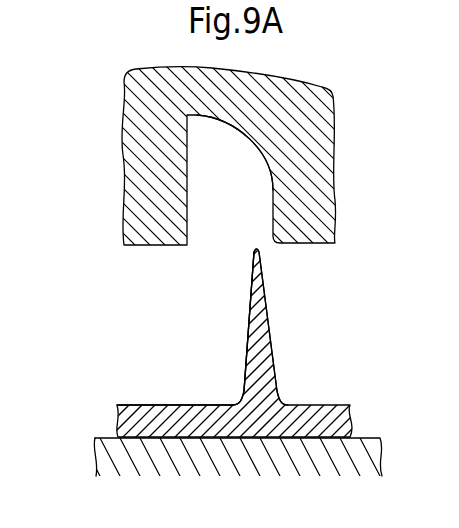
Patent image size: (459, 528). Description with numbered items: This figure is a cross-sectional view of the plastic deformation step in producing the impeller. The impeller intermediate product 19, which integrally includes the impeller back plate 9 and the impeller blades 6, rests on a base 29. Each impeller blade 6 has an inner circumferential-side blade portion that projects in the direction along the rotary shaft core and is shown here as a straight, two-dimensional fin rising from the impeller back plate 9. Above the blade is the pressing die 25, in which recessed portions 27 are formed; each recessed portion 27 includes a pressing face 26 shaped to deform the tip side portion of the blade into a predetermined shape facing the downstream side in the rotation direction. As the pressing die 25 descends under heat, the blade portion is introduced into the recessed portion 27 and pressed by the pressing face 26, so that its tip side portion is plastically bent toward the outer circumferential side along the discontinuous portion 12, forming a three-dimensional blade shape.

The pressing die 25 is at (125, 141).
The pressing face 26 is at (258, 152).
The recessed portion 27 is at (218, 210).
The impeller intermediate product 19 is at (322, 402).
The impeller blade 6 is at (273, 350).
The discontinuous portion 12 is at (250, 318).
The impeller back plate 9 is at (150, 413).
The base 29 is at (106, 458).